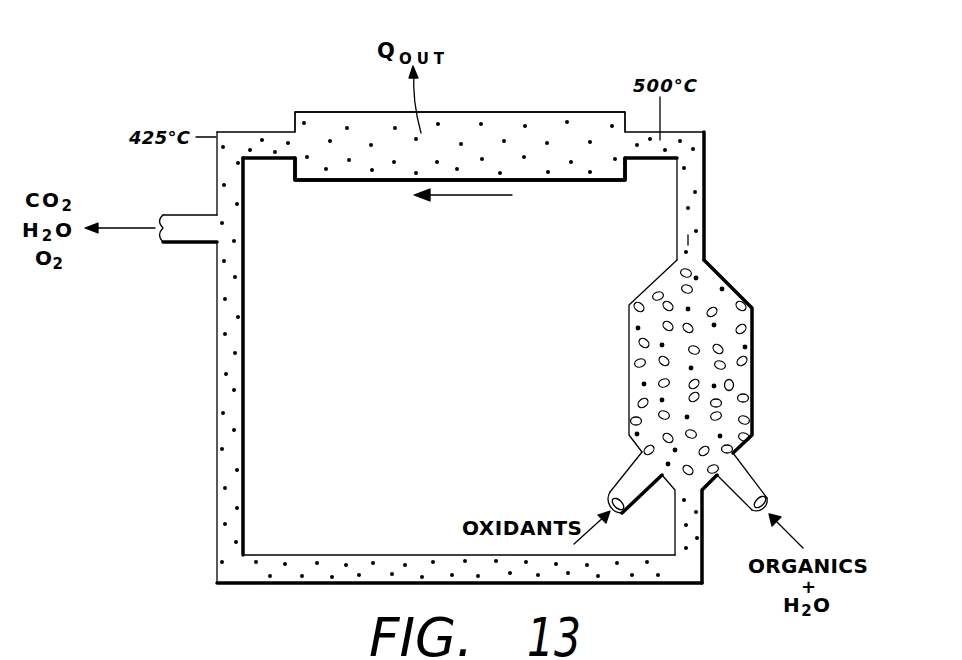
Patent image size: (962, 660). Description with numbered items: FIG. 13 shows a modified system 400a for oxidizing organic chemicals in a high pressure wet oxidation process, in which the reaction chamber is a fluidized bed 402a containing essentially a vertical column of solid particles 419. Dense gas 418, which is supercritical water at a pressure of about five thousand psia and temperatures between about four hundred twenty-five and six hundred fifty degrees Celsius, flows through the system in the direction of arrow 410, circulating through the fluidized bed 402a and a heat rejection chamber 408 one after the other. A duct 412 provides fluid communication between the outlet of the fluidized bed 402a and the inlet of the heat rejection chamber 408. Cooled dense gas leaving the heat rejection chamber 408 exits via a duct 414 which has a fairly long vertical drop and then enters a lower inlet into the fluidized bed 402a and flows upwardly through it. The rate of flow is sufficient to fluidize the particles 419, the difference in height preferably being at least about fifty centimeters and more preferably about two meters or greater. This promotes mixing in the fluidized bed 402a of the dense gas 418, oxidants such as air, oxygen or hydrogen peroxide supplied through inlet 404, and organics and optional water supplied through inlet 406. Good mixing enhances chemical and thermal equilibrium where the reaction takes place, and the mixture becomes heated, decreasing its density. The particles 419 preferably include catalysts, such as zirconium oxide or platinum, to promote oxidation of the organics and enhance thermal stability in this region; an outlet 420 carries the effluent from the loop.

The modified system 400a is at (679, 24).
The fluidized bed 402a is at (736, 293).
The port 404 is at (627, 475).
The port 406 is at (758, 478).
The heat rejection chamber 408 is at (484, 112).
The arrow 410 is at (446, 197).
The duct 412 is at (706, 176).
The duct 414 is at (216, 193).
The dense gas 418 is at (684, 223).
The solid particles 419 is at (734, 385).
The effluent outlet 420 is at (205, 244).